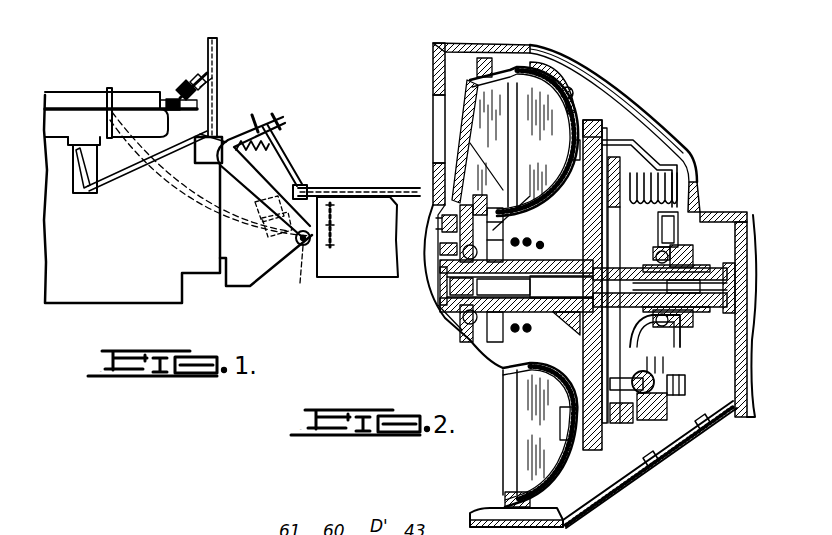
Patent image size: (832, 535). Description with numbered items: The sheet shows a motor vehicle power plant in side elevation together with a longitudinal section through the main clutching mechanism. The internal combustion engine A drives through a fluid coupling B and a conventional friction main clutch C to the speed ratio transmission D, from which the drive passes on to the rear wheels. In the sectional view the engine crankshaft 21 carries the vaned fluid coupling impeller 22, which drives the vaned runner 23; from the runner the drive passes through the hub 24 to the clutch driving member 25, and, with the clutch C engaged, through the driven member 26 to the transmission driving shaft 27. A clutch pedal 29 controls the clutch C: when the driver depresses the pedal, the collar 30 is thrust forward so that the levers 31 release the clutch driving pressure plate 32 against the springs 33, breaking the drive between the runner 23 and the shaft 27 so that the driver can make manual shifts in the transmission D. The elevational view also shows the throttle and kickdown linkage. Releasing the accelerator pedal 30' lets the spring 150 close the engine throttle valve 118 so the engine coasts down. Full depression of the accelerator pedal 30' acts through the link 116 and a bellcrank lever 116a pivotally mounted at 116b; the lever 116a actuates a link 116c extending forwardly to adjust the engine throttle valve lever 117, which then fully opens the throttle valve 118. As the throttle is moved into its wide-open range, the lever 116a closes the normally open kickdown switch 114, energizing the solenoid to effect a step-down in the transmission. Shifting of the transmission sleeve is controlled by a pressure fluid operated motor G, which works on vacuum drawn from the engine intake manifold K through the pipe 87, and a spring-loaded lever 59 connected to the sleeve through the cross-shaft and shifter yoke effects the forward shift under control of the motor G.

In FIG. 1, the internal combustion engine A is at (62, 98).
In FIG. 1, the engine intake manifold K is at (47, 124).
In FIG. 1, the pipe 87 is at (108, 88).
In FIG. 1, the throttle valve 118 is at (75, 158).
In FIG. 1, the engine throttle valve lever 117 is at (82, 168).
In FIG. 1, the link 116c is at (126, 165).
In FIG. 1, the kickdown switch 114 is at (176, 82).
In FIG. 1, the bellcrank lever 116a is at (160, 100).
In FIG. 1, the pivot 116b is at (205, 100).
In FIG. 1, the link 116 is at (240, 124).
In FIG. 1, the clutch pedal 29 is at (278, 117).
In FIG. 1, the spring 150 is at (268, 142).
In FIG. 1, the accelerator pedal 30' is at (299, 161).
In FIG. 1, the speed ratio transmission D is at (380, 200).
In FIG. 1, the lever 59 is at (335, 243).
In FIG. 1, the pressure fluid operated motor G is at (279, 249).
In FIG. 2, the engine crankshaft 21 is at (432, 260).
In FIG. 2, the fluid coupling impeller 22 is at (473, 113).
In FIG. 2, the fluid coupling B is at (535, 87).
In FIG. 2, the runner 23 is at (548, 97).
In FIG. 2, the clutch driving member 25 is at (593, 118).
In FIG. 2, the friction main clutch C is at (607, 140).
In FIG. 2, the springs 33 is at (652, 175).
In FIG. 2, the hub 24 is at (514, 268).
In FIG. 2, the transmission driving shaft 27 is at (727, 288).
In FIG. 2, the driven member 26 is at (602, 237).
In FIG. 2, the collar 30 is at (687, 269).
In FIG. 2, the levers 31 is at (660, 348).
In FIG. 2, the clutch driving pressure plate 32 is at (623, 410).